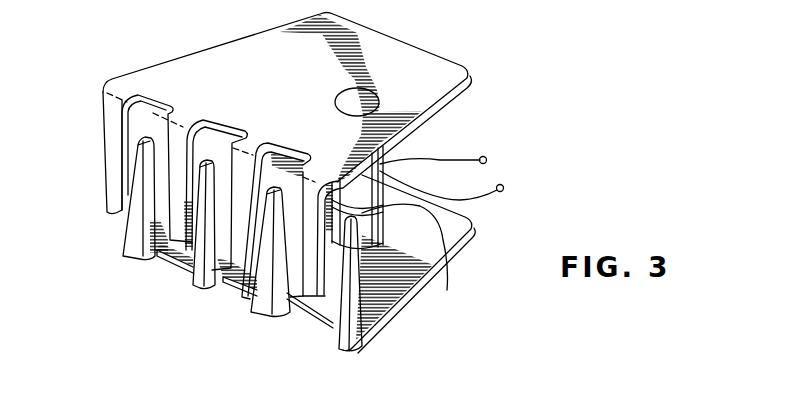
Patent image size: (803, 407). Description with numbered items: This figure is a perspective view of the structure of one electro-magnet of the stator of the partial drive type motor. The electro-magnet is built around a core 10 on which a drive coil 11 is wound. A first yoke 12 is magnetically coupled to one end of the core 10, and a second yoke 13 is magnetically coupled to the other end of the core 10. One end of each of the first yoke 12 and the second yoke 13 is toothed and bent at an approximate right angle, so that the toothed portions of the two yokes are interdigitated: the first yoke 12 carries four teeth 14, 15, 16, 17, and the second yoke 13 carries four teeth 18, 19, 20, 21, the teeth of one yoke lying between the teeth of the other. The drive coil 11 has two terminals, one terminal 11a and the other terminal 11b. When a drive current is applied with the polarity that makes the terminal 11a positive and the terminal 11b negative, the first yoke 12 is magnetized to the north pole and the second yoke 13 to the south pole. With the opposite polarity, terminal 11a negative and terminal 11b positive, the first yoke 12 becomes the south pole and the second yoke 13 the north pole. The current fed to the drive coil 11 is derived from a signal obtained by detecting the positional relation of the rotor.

The core 10 is at (378, 147).
The drive coil 11 is at (435, 270).
The terminal 11a is at (487, 160).
The terminal 11b is at (504, 188).
The first yoke 12 is at (194, 56).
The second yoke 13 is at (462, 257).
The tooth 14 is at (108, 160).
The tooth 15 is at (133, 262).
The tooth 16 is at (203, 272).
The tooth 17 is at (281, 318).
The tooth 18 is at (128, 232).
The tooth 19 is at (177, 272).
The tooth 20 is at (263, 292).
The tooth 21 is at (337, 315).